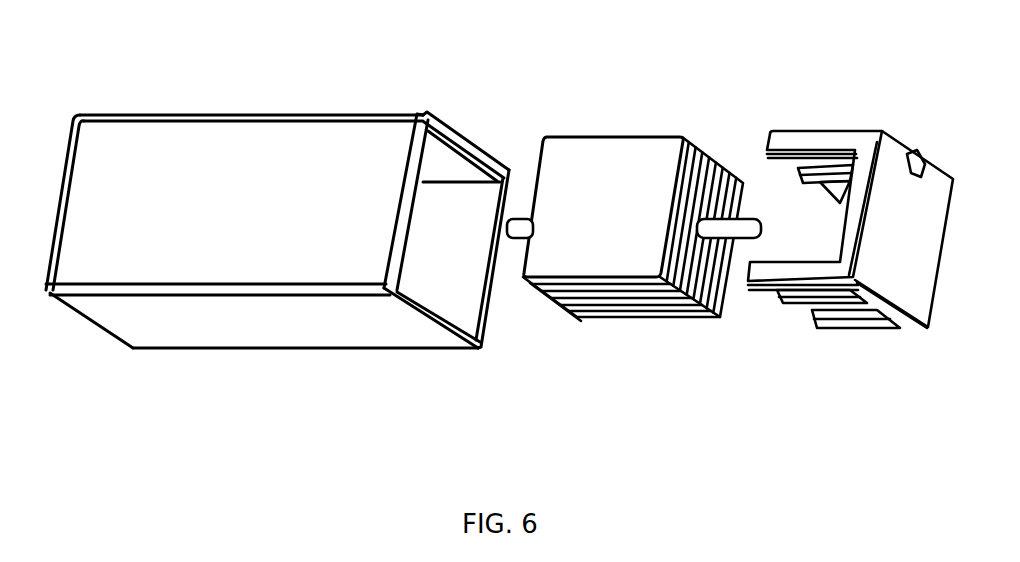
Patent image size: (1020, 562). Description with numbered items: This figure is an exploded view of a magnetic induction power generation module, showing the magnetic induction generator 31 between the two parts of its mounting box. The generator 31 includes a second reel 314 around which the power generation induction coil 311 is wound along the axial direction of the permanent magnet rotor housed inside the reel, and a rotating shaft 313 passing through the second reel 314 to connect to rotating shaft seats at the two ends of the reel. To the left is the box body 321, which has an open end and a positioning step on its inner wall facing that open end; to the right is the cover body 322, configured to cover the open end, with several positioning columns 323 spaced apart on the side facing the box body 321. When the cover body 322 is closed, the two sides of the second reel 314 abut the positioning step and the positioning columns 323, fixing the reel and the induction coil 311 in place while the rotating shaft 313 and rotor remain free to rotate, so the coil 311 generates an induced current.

The magnetic induction generator 31 is at (657, 250).
The power generation induction coil 311 is at (708, 153).
The rotating shaft 313 is at (749, 212).
The second reel 314 is at (616, 167).
The box body 321 is at (360, 338).
The cover body 322 is at (850, 238).
The positioning columns 323 is at (822, 133).